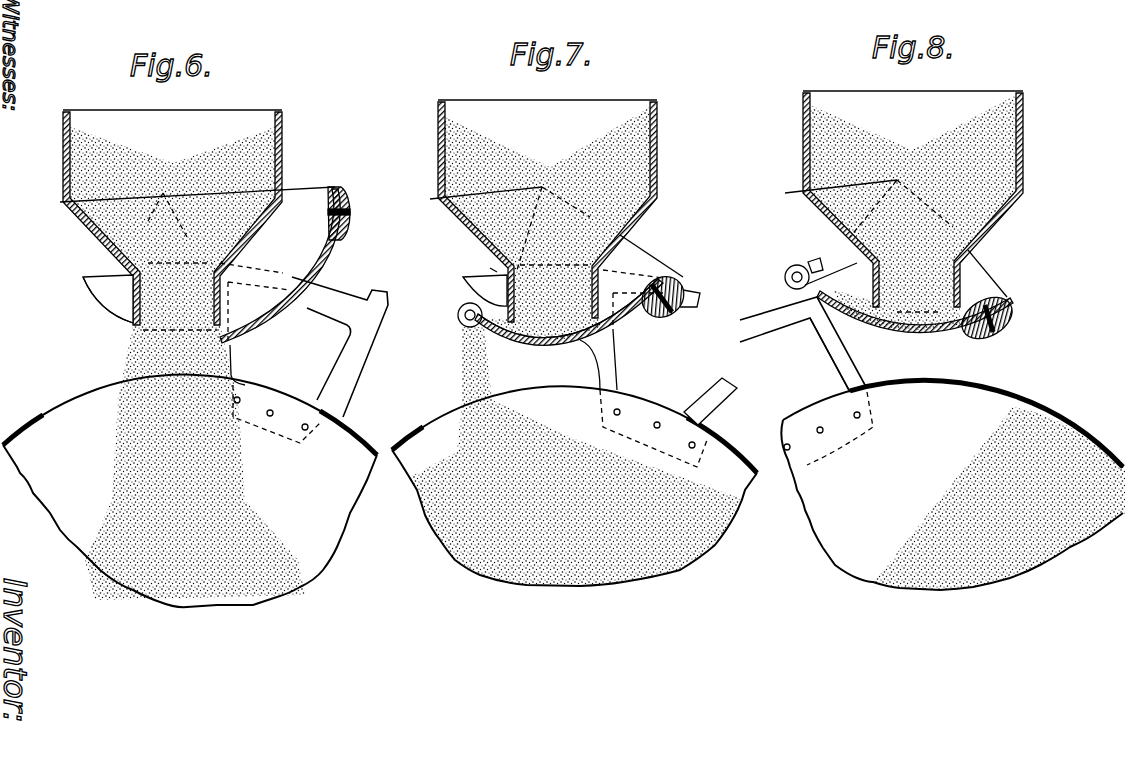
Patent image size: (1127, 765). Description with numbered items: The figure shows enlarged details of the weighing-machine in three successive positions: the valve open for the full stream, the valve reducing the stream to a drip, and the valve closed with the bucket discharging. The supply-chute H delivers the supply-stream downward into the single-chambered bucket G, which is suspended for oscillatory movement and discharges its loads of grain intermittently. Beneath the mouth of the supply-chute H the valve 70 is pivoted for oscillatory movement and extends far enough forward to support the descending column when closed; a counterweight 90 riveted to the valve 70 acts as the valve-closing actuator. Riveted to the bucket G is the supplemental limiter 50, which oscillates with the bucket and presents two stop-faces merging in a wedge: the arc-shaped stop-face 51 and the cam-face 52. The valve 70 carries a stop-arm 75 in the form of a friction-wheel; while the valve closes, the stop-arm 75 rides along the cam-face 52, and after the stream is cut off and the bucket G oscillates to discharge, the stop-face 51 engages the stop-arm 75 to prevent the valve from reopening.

In FIG. 6, the supplemental limiter 50 is at (120, 293).
In FIG. 7, the supplemental limiter 50 is at (480, 285).
In FIG. 8, the supplemental limiter 50 is at (768, 320).
In FIG. 6, the stop-face 51 is at (277, 258).
In FIG. 7, the stop-face 51 is at (480, 262).
In FIG. 8, the stop-face 51 is at (768, 310).
In FIG. 6, the cam-face 52 is at (126, 319).
In FIG. 7, the cam-face 52 is at (518, 332).
In FIG. 6, the valve 70 is at (343, 258).
In FIG. 7, the valve 70 is at (667, 260).
In FIG. 8, the valve 70 is at (993, 262).
In FIG. 6, the stop-arm 75 is at (226, 345).
In FIG. 7, the stop-arm 75 is at (458, 323).
In FIG. 8, the stop-arm 75 is at (787, 270).
In FIG. 6, the counterweight 90 is at (350, 218).
In FIG. 7, the counterweight 90 is at (668, 318).
In FIG. 8, the counterweight 90 is at (1008, 322).
In FIG. 6, the supply-chute H is at (182, 218).
In FIG. 7, the supply-chute H is at (558, 218).
In FIG. 8, the supply-chute H is at (924, 209).
In FIG. 6, the bucket G is at (190, 466).
In FIG. 7, the bucket G is at (574, 456).
In FIG. 8, the bucket G is at (953, 485).